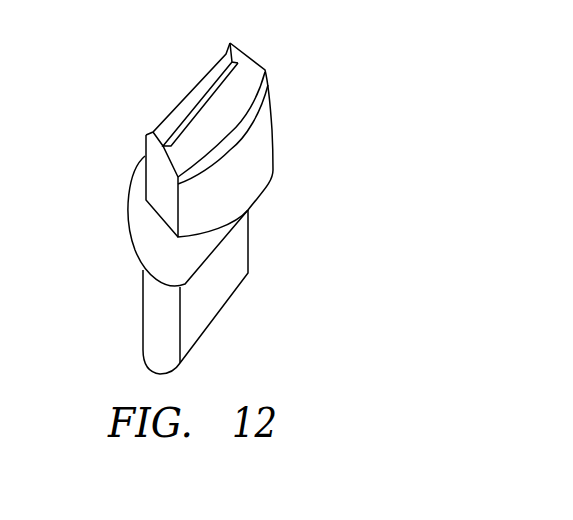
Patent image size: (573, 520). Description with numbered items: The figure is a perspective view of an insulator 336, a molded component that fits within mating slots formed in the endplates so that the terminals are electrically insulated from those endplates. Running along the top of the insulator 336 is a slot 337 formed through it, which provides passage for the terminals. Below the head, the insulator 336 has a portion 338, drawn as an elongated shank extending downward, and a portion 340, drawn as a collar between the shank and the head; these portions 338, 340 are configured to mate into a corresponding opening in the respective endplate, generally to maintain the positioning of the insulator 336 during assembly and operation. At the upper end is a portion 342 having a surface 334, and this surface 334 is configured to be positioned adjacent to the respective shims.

The surface 334 is at (257, 123).
The insulator 336 is at (253, 188).
The slot 337 is at (205, 102).
The portion 338 is at (247, 275).
The portion 340 is at (132, 241).
The portion 342 is at (258, 58).